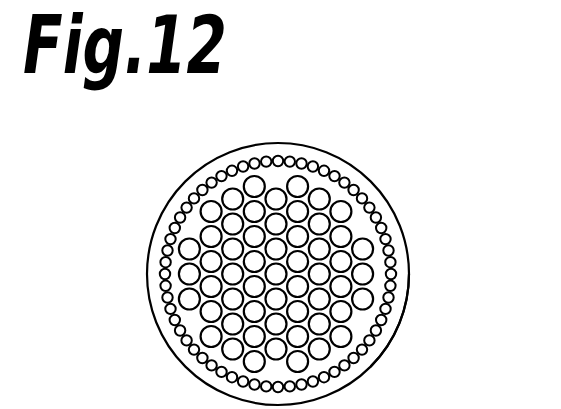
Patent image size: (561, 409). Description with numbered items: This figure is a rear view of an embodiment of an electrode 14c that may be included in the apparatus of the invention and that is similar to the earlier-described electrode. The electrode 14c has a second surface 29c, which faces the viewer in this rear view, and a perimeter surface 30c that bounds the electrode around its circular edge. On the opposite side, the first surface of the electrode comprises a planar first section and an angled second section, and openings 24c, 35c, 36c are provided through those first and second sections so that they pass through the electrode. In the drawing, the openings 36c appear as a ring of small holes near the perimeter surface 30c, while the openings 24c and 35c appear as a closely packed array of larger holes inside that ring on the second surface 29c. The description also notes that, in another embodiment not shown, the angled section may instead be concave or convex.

The electrode 14c is at (371, 181).
The perimeter surface 30c is at (392, 338).
The openings 36c is at (190, 194).
The openings 24c is at (380, 326).
The openings 35c is at (238, 321).
The second surface 29c is at (277, 176).